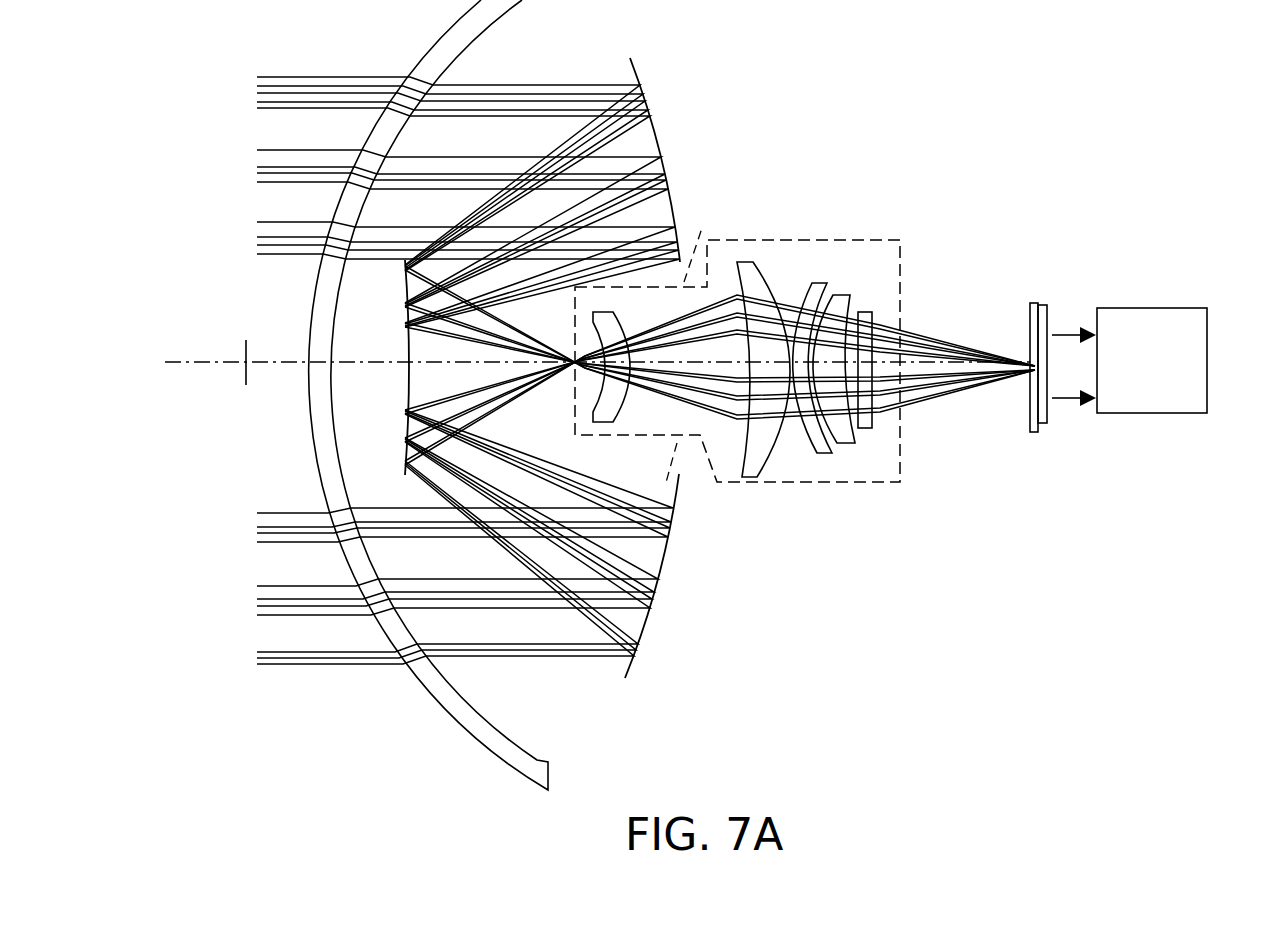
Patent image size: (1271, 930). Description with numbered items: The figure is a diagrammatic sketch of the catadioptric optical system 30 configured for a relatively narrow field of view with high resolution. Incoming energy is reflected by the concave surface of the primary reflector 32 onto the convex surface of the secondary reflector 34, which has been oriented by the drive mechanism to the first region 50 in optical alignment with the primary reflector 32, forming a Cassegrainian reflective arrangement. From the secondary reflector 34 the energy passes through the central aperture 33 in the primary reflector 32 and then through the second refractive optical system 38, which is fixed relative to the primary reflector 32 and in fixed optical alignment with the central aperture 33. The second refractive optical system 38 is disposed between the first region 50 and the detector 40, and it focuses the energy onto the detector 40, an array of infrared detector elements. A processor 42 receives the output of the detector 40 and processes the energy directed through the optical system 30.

The optical system 30 is at (776, 131).
The primary reflector 32 is at (653, 120).
The central aperture 33 is at (690, 482).
The secondary reflector 34 is at (405, 312).
The second refractive optical system 38 is at (843, 482).
The detector 40 is at (1033, 302).
The processor 42 is at (1152, 308).
The first region 50 is at (397, 388).